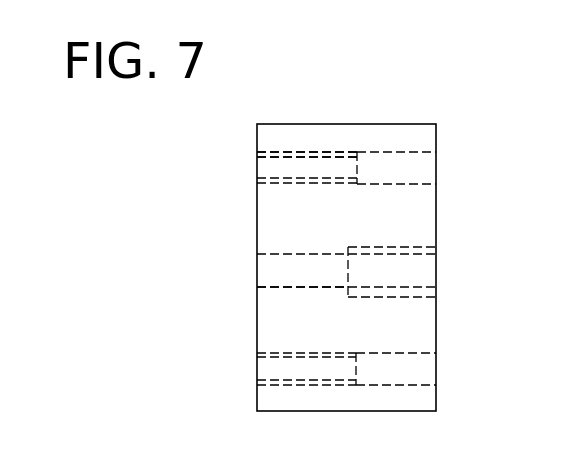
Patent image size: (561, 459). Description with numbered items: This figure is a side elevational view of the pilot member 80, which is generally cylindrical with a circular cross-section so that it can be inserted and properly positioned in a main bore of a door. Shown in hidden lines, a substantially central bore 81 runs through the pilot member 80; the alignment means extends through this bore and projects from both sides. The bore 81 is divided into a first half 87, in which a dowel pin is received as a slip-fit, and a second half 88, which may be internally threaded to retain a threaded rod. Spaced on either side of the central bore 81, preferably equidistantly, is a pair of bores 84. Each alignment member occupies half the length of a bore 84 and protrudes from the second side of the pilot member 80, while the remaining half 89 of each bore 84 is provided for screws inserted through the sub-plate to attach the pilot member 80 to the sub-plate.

The pilot member 80 is at (463, 217).
The central bore 81 is at (257, 270).
The bore 84 is at (257, 165).
The first half of bore 87 is at (287, 292).
The second half of bore 88 is at (398, 293).
The remaining half of bore 89 is at (287, 148).